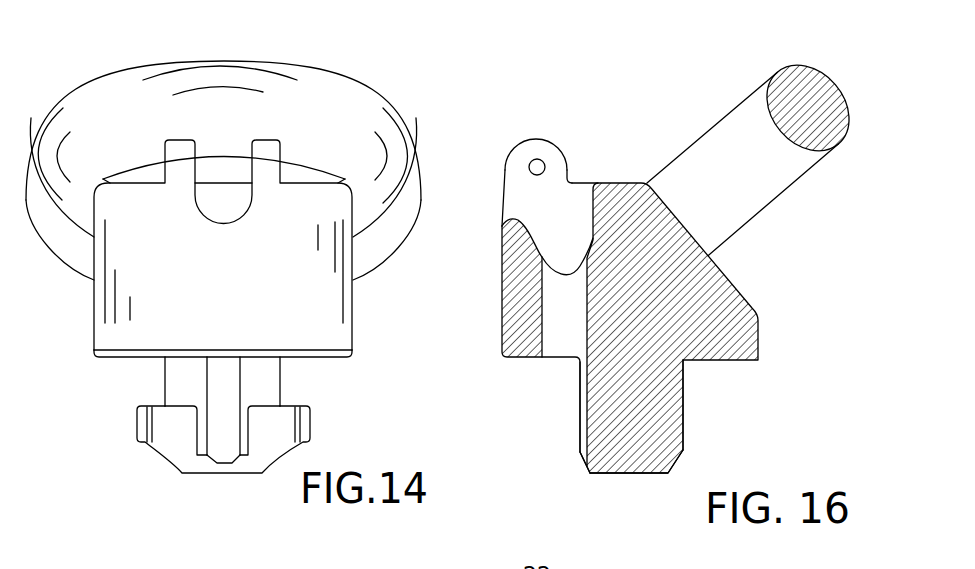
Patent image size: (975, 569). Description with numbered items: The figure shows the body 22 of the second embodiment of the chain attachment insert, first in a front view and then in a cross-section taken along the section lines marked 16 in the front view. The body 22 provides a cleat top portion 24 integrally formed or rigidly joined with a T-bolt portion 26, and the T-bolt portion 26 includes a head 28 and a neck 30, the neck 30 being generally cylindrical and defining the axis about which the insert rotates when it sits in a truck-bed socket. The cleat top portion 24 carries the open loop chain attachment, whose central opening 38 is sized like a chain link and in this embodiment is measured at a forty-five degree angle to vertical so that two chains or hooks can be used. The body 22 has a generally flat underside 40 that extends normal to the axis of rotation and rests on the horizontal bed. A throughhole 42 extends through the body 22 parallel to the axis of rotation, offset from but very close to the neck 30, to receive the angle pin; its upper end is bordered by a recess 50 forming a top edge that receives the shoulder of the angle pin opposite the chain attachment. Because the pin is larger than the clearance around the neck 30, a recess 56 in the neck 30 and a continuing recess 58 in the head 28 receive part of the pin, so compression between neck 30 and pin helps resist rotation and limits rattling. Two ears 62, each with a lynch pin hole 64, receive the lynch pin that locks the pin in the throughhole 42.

In FIG. 14, the flats 16 is at (196, 2).
In FIG. 14, the body 22 is at (390, 58).
In FIG. 16, the body 22 is at (684, 72).
In FIG. 14, the cleat top portion 24 is at (333, 300).
In FIG. 16, the cleat top portion 24 is at (614, 197).
In FIG. 14, the T-bolt portion 26 is at (300, 407).
In FIG. 14, the head 28 is at (165, 418).
In FIG. 16, the head 28 is at (667, 443).
In FIG. 14, the neck 30 is at (177, 365).
In FIG. 16, the neck 30 is at (670, 385).
In FIG. 14, the opening 38 is at (232, 167).
In FIG. 16, the opening 38 is at (737, 178).
In FIG. 14, the flat underside 40 is at (110, 360).
In FIG. 16, the flat underside 40 is at (527, 358).
In FIG. 16, the throughhole 42 is at (565, 323).
In FIG. 16, the recess 50 is at (532, 203).
In FIG. 14, the recess 56 is at (223, 367).
In FIG. 16, the recess 56 is at (580, 393).
In FIG. 14, the recess 58 is at (223, 443).
In FIG. 16, the recess 58 is at (582, 443).
In FIG. 16, the ears 62 is at (525, 150).
In FIG. 16, the lynch pin hole 64 is at (545, 166).